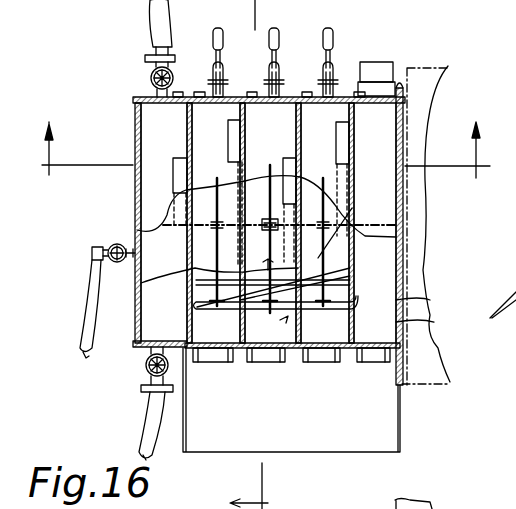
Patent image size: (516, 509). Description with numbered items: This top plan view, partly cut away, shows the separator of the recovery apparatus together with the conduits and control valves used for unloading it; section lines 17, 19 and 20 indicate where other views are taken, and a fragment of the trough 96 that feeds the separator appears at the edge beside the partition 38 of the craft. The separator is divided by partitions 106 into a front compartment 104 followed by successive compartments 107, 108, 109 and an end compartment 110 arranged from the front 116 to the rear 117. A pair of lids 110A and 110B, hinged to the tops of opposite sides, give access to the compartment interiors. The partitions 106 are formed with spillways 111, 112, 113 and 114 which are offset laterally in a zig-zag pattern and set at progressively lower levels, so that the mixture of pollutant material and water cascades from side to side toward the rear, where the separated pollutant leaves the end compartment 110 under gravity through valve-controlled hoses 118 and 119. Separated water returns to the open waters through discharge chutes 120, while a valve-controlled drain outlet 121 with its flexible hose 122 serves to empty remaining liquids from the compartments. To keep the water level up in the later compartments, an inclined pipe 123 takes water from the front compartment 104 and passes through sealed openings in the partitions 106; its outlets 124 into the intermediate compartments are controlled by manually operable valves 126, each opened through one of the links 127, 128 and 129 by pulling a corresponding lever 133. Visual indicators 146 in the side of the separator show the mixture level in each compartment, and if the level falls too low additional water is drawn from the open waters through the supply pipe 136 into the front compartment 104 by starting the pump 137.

The lid 110A is at (138, 118).
The lid 110B is at (433, 234).
The rear of the separator 117 is at (142, 182).
The end compartment 110 is at (172, 137).
The compartment 109 is at (224, 136).
The compartment 108 is at (280, 136).
The compartment 107 is at (329, 135).
The front compartment 104 is at (384, 135).
The spillway 114 is at (178, 175).
The spillway 113 is at (238, 148).
The spillway 112 is at (287, 170).
The spillway 111 is at (340, 150).
The link 127 is at (188, 246).
The manually operable valve 126 is at (270, 207).
The link 128 is at (270, 239).
The outlet 124 is at (340, 279).
The inclined pipe 123 is at (352, 300).
The link 129 is at (349, 225).
The section line 20 is at (278, 296).
The discharge chute 120 is at (214, 362).
The lever 133 is at (213, 45).
The visual indicator 146 is at (180, 92).
The valve-controlled hose 118 is at (152, 24).
The valve-controlled hose 119 is at (146, 430).
The valve-controlled drain outlet 121 is at (131, 244).
The outlet flexible valve-controlled hose 122 is at (92, 286).
The pump 137 is at (397, 90).
The supply pipe 136 is at (417, 92).
The partition 38 is at (432, 90).
The partition 106 is at (428, 300).
The front of the separator 116 is at (433, 322).
The section line 17 is at (249, 254).
The section line 19 is at (266, 150).
The trough 96 is at (386, 508).